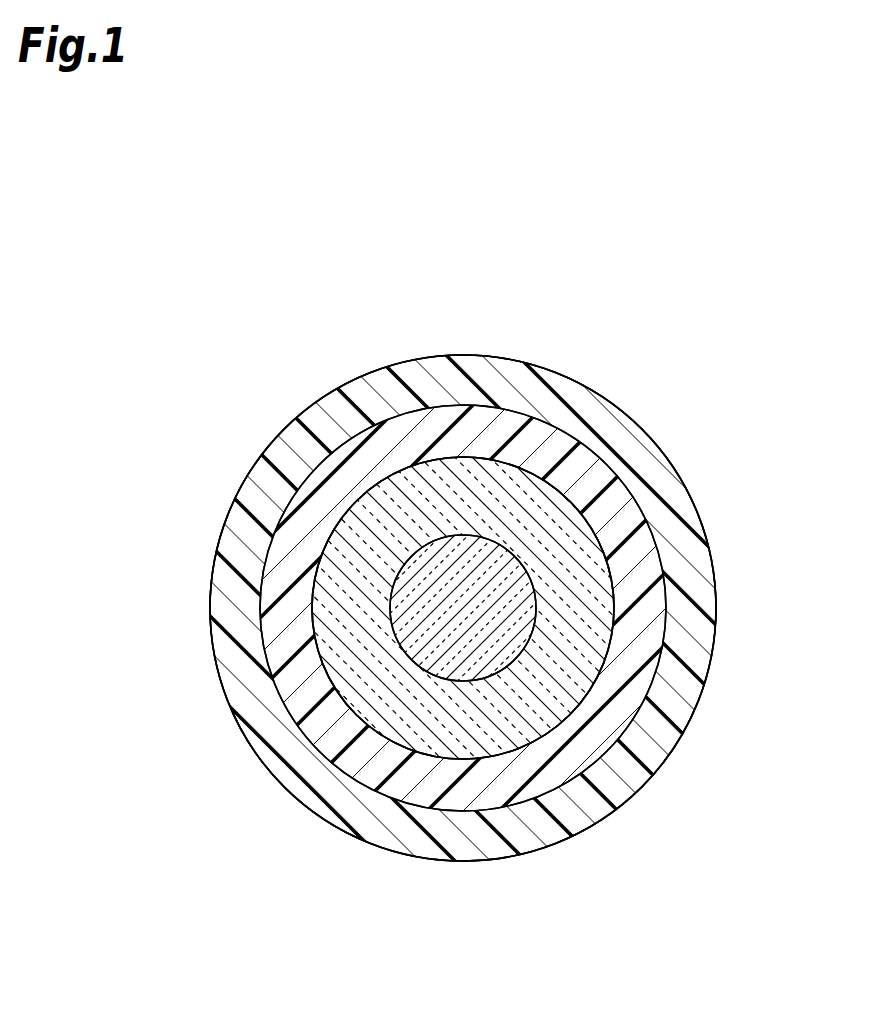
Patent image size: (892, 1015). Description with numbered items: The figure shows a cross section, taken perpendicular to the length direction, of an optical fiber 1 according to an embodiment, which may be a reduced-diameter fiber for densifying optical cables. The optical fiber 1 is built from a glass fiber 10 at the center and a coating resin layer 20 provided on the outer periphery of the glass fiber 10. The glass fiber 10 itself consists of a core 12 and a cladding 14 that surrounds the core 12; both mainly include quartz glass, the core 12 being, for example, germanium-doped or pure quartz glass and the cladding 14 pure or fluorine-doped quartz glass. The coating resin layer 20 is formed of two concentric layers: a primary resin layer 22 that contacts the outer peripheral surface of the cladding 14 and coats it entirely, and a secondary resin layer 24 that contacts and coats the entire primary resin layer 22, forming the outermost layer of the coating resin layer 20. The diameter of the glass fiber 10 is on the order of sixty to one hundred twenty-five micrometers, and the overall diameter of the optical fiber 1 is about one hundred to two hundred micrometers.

The optical fiber 1 is at (549, 295).
The glass fiber 10 is at (556, 549).
The core 12 is at (520, 570).
The cladding 14 is at (587, 580).
The coating resin layer 20 is at (809, 627).
The primary resin layer 22 is at (658, 628).
The secondary resin layer 24 is at (672, 733).